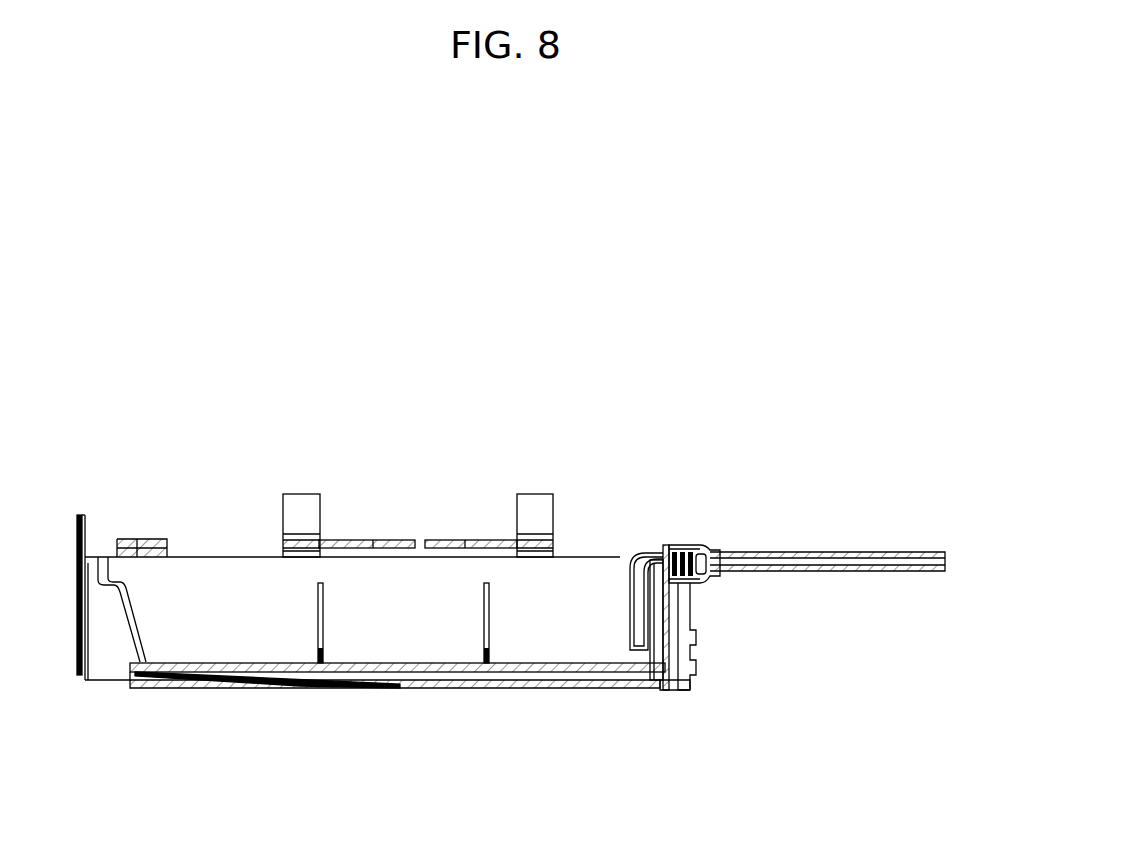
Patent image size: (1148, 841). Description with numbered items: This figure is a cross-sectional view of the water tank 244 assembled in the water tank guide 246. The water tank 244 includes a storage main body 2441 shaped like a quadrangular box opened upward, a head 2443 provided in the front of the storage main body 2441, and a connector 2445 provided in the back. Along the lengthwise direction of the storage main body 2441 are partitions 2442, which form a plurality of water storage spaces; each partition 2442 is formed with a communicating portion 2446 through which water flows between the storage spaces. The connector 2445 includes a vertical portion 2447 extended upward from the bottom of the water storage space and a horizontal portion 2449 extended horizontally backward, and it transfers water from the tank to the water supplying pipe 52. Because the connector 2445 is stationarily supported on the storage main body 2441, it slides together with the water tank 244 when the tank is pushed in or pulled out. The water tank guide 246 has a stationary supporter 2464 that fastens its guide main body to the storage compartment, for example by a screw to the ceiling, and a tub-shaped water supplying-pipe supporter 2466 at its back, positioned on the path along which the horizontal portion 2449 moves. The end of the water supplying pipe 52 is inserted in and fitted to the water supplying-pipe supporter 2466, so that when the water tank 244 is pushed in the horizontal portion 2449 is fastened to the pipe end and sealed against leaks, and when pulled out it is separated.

The head 2443 is at (78, 514).
The storage main body 2441 is at (118, 632).
The water tank 244 is at (262, 670).
The water tank guide 246 is at (370, 710).
The partition 2442 is at (487, 625).
The stationary supporter 2464 is at (301, 494).
The communicating portion 2446 is at (483, 665).
The connector 2445 is at (678, 462).
The vertical portion 2447 is at (630, 620).
The horizontal portion 2449 is at (660, 553).
The water supplying-pipe supporter 2466 is at (712, 548).
The water supplying pipe 52 is at (817, 551).